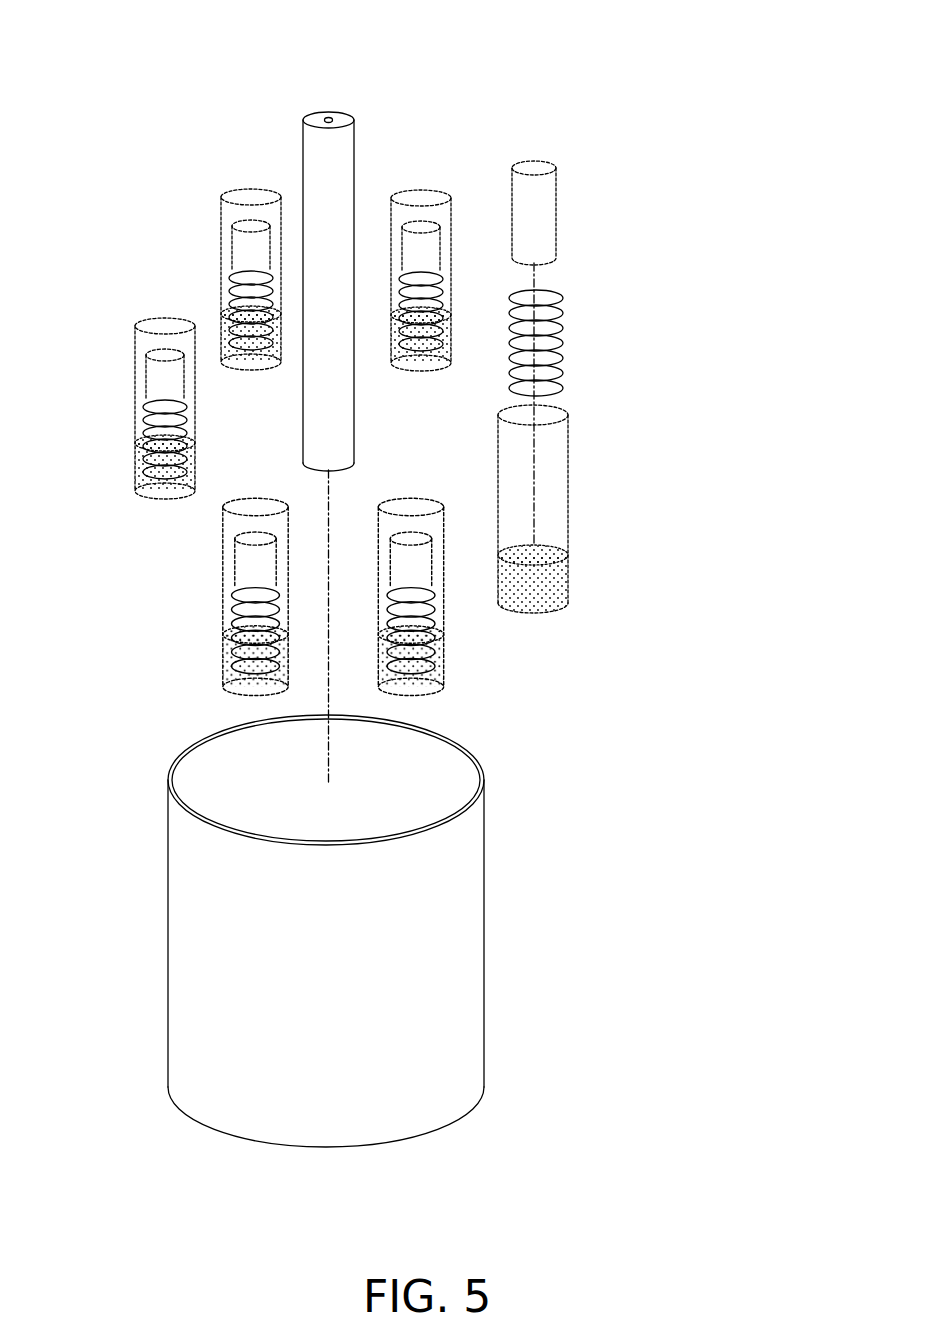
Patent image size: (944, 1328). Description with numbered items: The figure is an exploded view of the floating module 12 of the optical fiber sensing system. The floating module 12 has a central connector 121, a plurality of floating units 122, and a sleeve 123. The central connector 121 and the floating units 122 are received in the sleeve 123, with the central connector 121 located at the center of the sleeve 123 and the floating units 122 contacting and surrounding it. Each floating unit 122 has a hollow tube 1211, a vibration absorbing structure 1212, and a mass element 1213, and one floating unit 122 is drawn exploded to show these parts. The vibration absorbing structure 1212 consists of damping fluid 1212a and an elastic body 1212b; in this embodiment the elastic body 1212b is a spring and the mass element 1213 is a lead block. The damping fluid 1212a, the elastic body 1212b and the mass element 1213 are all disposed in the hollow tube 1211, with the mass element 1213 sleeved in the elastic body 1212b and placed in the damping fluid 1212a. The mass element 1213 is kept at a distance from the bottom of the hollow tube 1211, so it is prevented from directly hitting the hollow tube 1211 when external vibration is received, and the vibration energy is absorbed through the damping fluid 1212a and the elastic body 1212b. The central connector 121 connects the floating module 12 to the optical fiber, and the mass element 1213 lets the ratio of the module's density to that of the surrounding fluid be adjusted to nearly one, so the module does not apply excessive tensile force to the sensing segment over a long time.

The floating module 12 is at (68, 30).
The central connector 121 is at (320, 152).
The floating unit 122 is at (222, 224).
The sleeve 123 is at (200, 918).
The hollow tube 1211 is at (555, 486).
The vibration absorbing structure 1212 is at (705, 360).
The damping fluid 1212a is at (557, 588).
The elastic body 1212b is at (563, 350).
The mass element 1213 is at (537, 212).